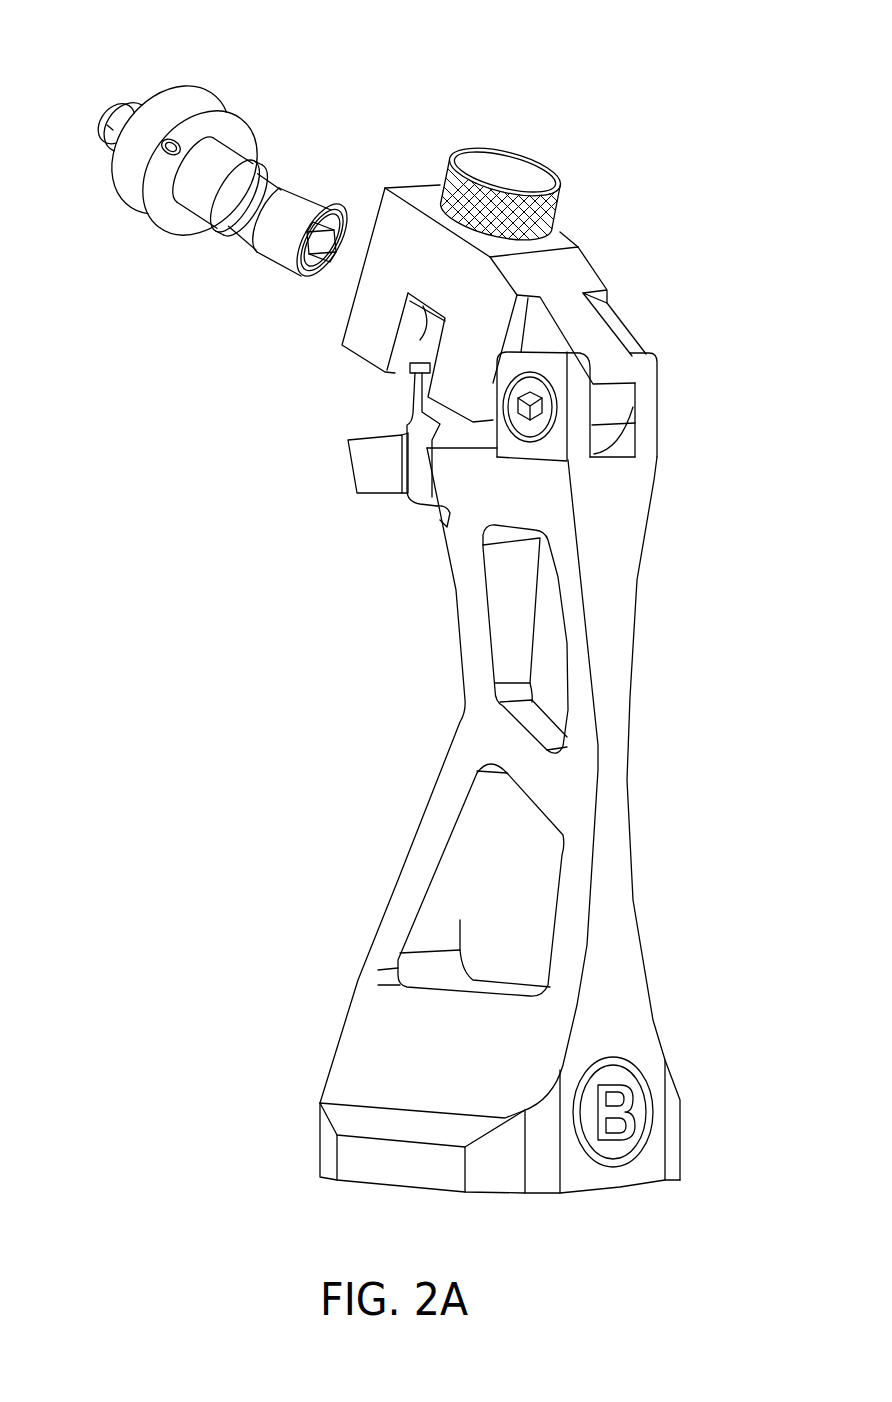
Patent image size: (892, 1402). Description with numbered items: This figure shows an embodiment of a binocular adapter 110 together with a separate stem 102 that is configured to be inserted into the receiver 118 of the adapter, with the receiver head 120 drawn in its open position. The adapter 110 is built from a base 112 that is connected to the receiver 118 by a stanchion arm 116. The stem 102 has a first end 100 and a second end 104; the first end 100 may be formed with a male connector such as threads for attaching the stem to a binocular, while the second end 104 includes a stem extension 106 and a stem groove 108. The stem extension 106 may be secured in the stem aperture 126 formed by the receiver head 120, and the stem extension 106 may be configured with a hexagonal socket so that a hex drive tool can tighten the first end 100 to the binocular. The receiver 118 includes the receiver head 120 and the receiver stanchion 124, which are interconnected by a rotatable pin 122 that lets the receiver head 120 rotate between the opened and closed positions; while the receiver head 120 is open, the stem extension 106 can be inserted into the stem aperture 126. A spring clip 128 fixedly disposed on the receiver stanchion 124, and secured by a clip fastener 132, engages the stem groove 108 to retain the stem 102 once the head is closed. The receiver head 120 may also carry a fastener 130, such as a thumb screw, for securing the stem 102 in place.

The first end 100 is at (117, 108).
The stem 102 is at (223, 93).
The second end 104 is at (312, 193).
The stem extension 106 is at (285, 267).
The stem groove 108 is at (247, 233).
The binocular adapter 110 is at (661, 131).
The base 112 is at (680, 1105).
The stanchion arm 116 is at (623, 677).
The receiver 118 is at (657, 350).
The receiver head 120 is at (410, 187).
The rotatable pin 122 is at (563, 387).
The receiver stanchion 124 is at (350, 473).
The stem aperture 126 is at (425, 342).
The spring clip 128 is at (418, 392).
The fastener 130 is at (513, 162).
The clip fastener 132 is at (447, 520).